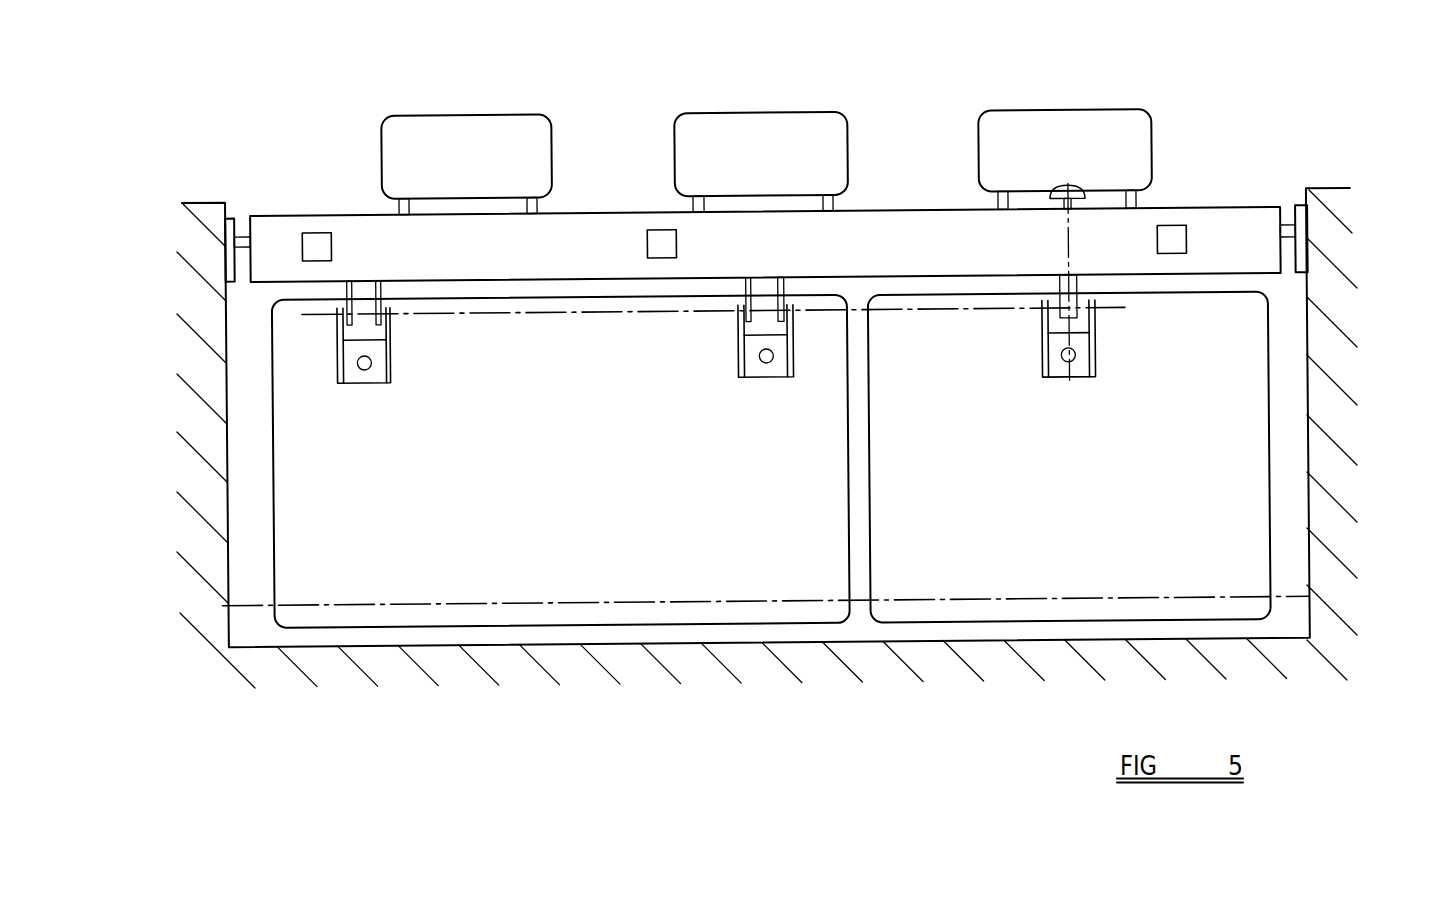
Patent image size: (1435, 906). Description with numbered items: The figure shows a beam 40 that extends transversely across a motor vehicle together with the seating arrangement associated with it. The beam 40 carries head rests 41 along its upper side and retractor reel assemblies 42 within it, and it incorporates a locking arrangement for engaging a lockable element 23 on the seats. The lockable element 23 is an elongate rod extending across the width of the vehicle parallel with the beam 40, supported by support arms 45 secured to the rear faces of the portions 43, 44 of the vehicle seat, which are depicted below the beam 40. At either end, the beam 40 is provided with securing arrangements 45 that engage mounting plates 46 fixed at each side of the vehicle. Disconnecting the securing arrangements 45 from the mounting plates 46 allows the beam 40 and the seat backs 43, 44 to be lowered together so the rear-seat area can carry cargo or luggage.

The lockable element 23 is at (617, 313).
The beam 40 is at (1220, 227).
The head rests 41 is at (491, 133).
The retractor reel assemblies 42 is at (317, 243).
The portion of vehicle seat 43 is at (300, 490).
The portion of vehicle seat 44 is at (1233, 500).
The securing arrangements 45 is at (245, 200).
The mounting plates 46 is at (227, 258).